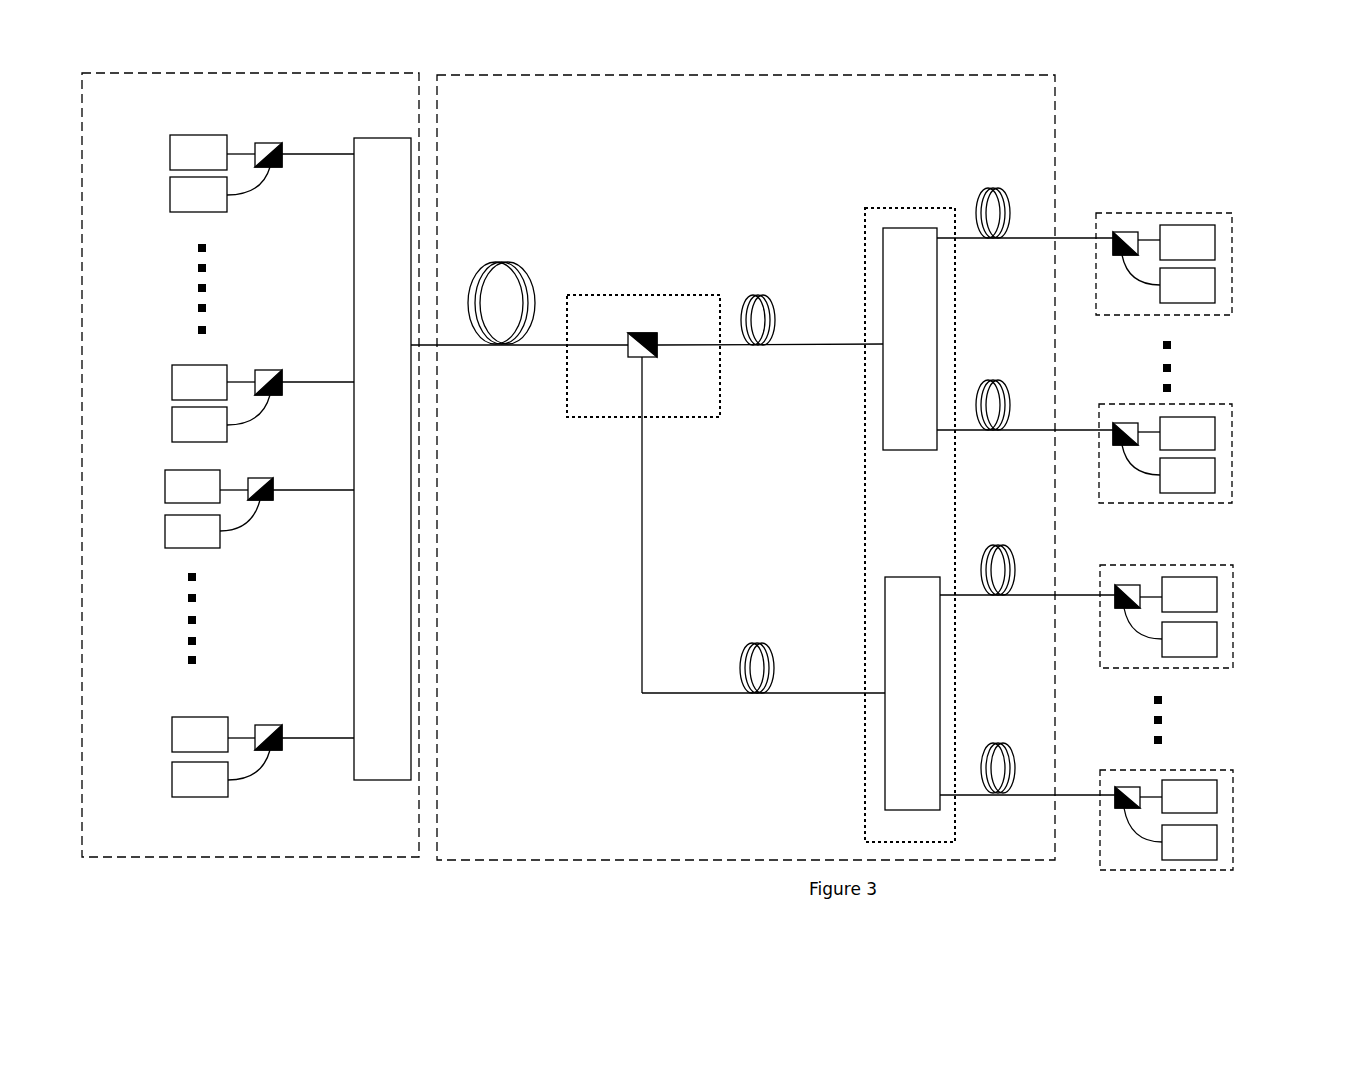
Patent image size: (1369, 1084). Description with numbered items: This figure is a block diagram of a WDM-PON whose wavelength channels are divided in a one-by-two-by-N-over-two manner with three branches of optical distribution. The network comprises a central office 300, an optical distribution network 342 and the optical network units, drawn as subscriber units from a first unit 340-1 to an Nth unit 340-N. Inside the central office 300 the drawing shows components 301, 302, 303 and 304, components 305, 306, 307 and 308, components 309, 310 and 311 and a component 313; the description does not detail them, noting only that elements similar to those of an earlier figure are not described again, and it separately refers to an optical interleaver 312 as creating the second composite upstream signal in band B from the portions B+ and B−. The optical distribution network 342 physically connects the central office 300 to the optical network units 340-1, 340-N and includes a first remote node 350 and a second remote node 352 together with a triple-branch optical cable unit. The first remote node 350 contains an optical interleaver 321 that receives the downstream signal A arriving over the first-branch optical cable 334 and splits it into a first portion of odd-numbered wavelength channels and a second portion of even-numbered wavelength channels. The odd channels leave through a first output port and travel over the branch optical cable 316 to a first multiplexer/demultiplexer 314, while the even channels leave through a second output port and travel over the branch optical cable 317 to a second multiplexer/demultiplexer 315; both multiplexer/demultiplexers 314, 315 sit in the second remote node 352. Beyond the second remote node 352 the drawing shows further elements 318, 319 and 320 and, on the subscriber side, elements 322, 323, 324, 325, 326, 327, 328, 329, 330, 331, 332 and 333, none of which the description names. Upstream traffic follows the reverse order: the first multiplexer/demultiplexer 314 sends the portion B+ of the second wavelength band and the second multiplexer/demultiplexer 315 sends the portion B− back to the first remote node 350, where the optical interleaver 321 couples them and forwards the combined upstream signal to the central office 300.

The central office 300 is at (250, 479).
The transmitter Tx{B} 301 is at (182, 134).
The transmitter Tx{B} 302 is at (170, 380).
The transmitter Tx{B} 303 is at (165, 485).
The transmitter Tx{B} 304 is at (190, 715).
The receiver Rx 305 is at (170, 182).
The receiver Rx 306 is at (172, 413).
The receiver Rx 307 is at (165, 535).
The receiver Rx 308 is at (172, 787).
The optical coupler/splitter 309 is at (257, 142).
The optical coupler/splitter 310 is at (270, 368).
The optical coupler/splitter 311 is at (262, 477).
The optical interleaver 312 is at (267, 723).
The 1 x (N) MUX/DEMUX 313 is at (378, 138).
The first multiplexer/demultiplexer 314 is at (883, 442).
The second multiplexer/demultiplexer 315 is at (885, 797).
The second-branch optical cable 316 is at (763, 297).
The branch optical cable 317 is at (760, 647).
The optical fiber 318 is at (993, 185).
The optical fiber 319 is at (993, 380).
The optical fiber 320 is at (998, 545).
The optical interleaver 321 is at (628, 350).
The subscriber optical coupler 322 is at (1115, 232).
The subscriber optical coupler 323 is at (1115, 445).
The subscriber optical coupler 324 is at (1112, 605).
The subscriber optical coupler 325 is at (1120, 787).
The subscriber receiver Rx 326 is at (1205, 227).
The subscriber receiver Rx 327 is at (1193, 417).
The subscriber receiver Rx 328 is at (1192, 577).
The subscriber receiver Rx 329 is at (1190, 780).
The subscriber transmitter Tx{A} 330 is at (1173, 305).
The subscriber transmitter Tx{A} 331 is at (1223, 493).
The subscriber transmitter Tx{A} 332 is at (1203, 657).
The subscriber transmitter Tx{A} 333 is at (1188, 860).
The first-branch optical cable 334 is at (518, 263).
The optical network unit 340-1 is at (1232, 313).
The optical network unit 340-N is at (1245, 787).
The optical distribution network 342 is at (746, 488).
The first remote node 350 is at (643, 342).
The second remote node 352 is at (904, 508).